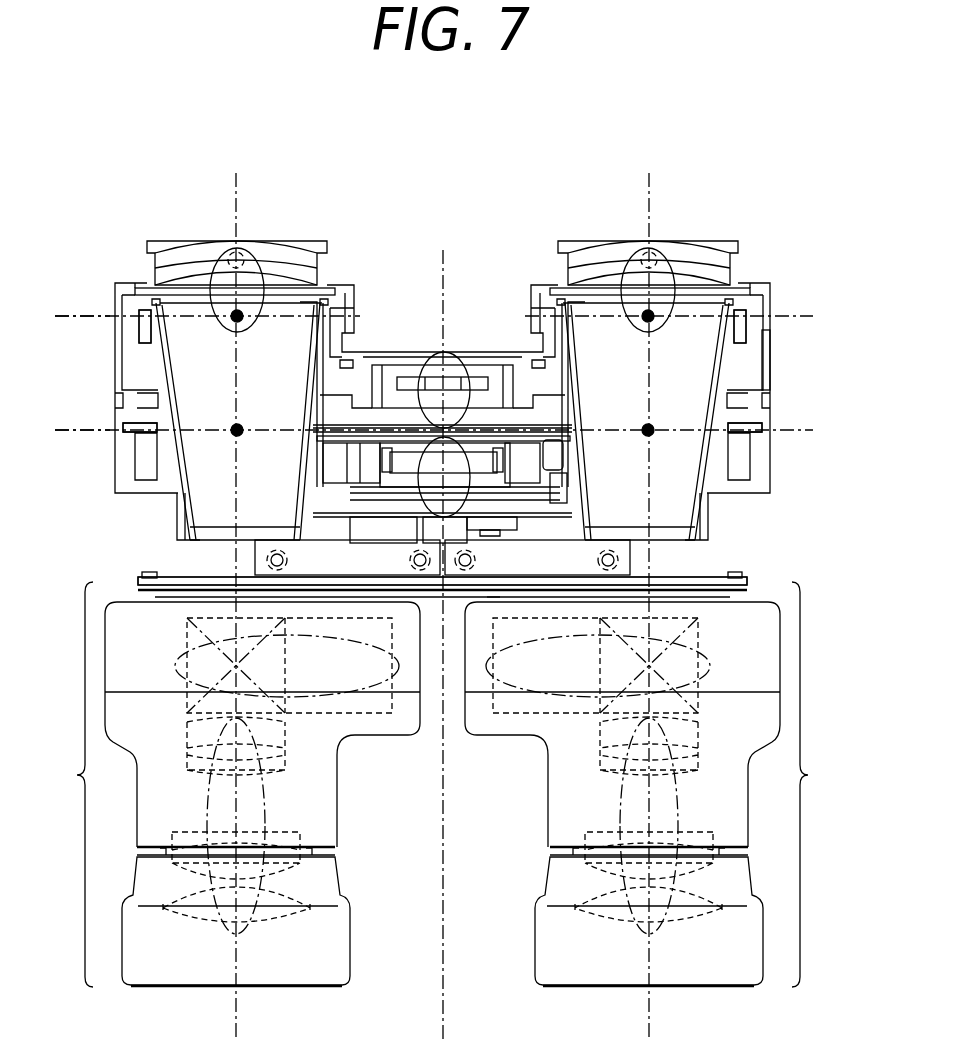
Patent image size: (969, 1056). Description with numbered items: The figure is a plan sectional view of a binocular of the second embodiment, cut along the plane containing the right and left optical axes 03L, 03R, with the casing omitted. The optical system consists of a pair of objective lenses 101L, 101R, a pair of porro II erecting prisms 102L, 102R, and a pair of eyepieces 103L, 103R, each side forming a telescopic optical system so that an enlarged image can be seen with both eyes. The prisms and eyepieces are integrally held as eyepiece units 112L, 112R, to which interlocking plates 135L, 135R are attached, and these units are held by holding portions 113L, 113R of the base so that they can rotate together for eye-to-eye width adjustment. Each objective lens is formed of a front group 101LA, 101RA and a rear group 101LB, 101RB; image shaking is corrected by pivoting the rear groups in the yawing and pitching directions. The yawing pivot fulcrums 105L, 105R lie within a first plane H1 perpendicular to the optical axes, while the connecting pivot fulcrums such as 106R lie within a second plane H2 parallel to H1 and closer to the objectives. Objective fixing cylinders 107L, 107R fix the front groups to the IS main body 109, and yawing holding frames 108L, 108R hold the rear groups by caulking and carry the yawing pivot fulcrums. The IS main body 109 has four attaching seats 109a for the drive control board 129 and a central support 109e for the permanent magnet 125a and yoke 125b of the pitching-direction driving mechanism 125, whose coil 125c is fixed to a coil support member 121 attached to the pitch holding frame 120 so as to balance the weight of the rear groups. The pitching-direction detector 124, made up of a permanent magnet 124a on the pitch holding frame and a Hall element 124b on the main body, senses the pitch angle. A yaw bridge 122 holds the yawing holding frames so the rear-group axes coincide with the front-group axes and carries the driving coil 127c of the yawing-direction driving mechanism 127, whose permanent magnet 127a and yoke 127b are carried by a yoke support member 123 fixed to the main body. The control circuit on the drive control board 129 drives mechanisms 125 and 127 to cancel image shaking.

The optical axis 03L is at (232, 180).
The optical axis 03R is at (645, 185).
The objective lens 101L is at (240, 242).
The front group 101LA is at (229, 257).
The rear group 101LB is at (215, 290).
The objective lens 101R is at (660, 245).
The front group 101RA is at (665, 258).
The rear group 101RB is at (670, 300).
The erecting prism 102L is at (180, 658).
The erecting prism 102R is at (690, 657).
The eyepiece 103L is at (267, 808).
The eyepiece 103R is at (620, 808).
The yawing pivot fulcrum 105L is at (200, 390).
The yawing pivot fulcrum 105R is at (656, 424).
The connecting pivot fulcrum 106R is at (727, 290).
The objective fixing cylinder 107L is at (348, 285).
The objective fixing cylinder 107R is at (537, 285).
The yawing holding frame 108L is at (172, 287).
The yawing holding frame 108R is at (725, 360).
The IS main body 109 is at (128, 413).
The attaching seat 109a is at (510, 580).
The support 109e is at (735, 432).
The eyepiece unit 112L is at (59, 784).
The eyepiece unit 112R is at (827, 784).
The holding portion 113L is at (137, 583).
The holding portion 113R is at (747, 587).
The pitch holding frame 120 is at (760, 433).
The coil support member 121 is at (567, 462).
The yaw bridge 122 is at (336, 330).
The yoke support member 123 is at (362, 375).
The pitching-direction detector 124 is at (565, 445).
The permanent magnet 124a is at (560, 477).
The Hall element 124b is at (556, 490).
The pitching-direction driving mechanism 125 is at (405, 545).
The permanent magnet 125a is at (395, 462).
The yoke 125b is at (386, 452).
The coil 125c is at (345, 470).
The yawing-direction driving mechanism 127 is at (454, 350).
The permanent magnet 127a is at (380, 375).
The yoke 127b is at (425, 385).
The driving coil 127c is at (490, 385).
The drive control board 129 is at (442, 557).
The interlocking plate 135L is at (180, 573).
The interlocking plate 135R is at (680, 577).
The first plane H1 is at (73, 430).
The second plane H2 is at (80, 313).